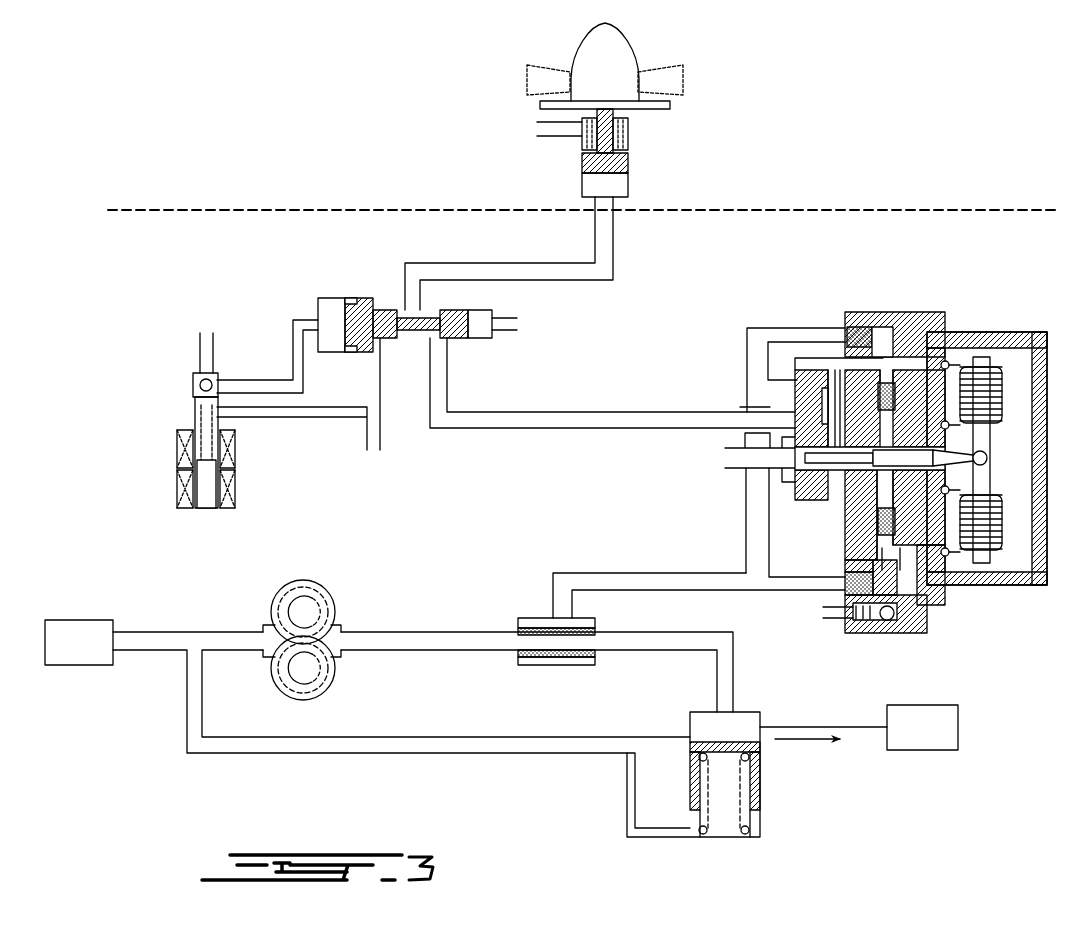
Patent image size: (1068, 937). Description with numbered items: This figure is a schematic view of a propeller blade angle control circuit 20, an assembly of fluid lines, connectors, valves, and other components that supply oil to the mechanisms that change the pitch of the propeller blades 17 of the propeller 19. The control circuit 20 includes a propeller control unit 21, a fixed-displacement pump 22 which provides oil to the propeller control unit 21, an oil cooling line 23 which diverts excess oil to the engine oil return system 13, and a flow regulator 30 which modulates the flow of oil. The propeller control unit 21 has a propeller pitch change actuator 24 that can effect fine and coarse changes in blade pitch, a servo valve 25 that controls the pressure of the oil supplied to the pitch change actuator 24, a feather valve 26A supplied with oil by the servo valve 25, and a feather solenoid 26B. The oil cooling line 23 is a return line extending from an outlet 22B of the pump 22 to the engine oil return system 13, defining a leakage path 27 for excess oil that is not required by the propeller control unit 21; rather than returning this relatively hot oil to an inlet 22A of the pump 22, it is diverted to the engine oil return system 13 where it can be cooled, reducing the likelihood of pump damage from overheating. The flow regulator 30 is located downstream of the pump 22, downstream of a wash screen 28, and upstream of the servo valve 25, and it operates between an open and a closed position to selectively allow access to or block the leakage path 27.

The engine oil return system 13 is at (501, 685).
The propeller blades 17 is at (537, 80).
The propeller 19 is at (622, 28).
The control circuit 20 is at (187, 240).
The propeller control unit 21 is at (700, 316).
The fixed-displacement pump 22 is at (330, 592).
The inlet 22A is at (245, 628).
The outlet 22B is at (364, 631).
The oil cooling line 23 is at (727, 667).
The propeller pitch change actuator 24 is at (628, 173).
The servo valve 25 is at (919, 307).
The feather valve 26A is at (360, 298).
The feather solenoid 26B is at (244, 474).
The leakage path 27 is at (802, 741).
The wash screen 28 is at (558, 665).
The flow regulator 30 is at (768, 801).